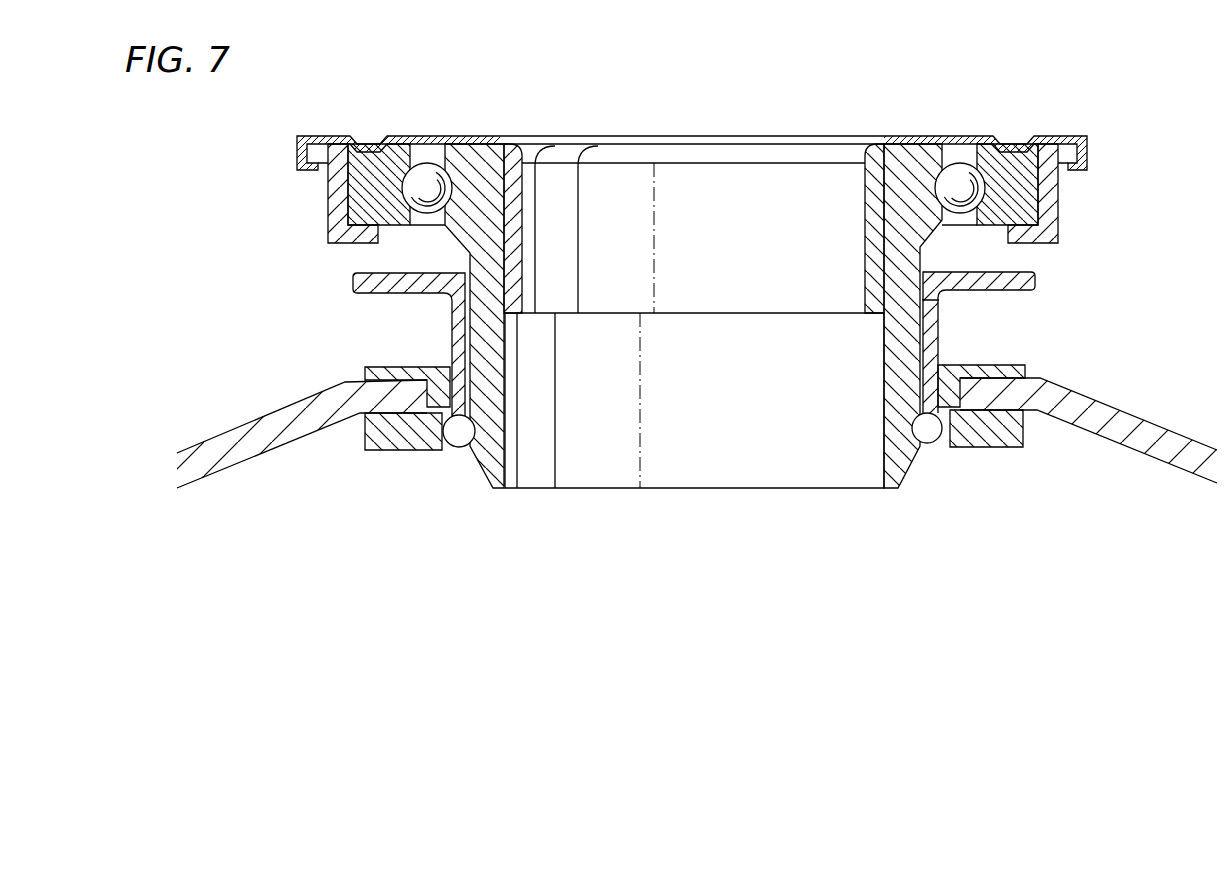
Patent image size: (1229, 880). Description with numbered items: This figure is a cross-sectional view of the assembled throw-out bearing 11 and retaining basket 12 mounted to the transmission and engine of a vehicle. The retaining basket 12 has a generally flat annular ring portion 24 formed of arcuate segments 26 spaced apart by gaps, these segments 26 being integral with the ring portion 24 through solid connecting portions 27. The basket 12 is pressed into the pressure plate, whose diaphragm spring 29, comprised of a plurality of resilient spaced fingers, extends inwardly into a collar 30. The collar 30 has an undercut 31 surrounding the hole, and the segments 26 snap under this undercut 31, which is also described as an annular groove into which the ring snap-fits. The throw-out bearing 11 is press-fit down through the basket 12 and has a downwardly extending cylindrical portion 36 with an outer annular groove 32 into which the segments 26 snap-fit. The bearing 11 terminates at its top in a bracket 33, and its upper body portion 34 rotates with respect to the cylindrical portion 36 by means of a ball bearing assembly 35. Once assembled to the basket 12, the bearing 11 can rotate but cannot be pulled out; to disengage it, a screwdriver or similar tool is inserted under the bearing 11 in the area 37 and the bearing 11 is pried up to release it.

The throw-out bearing 11 is at (478, 217).
The retaining basket 12 is at (955, 324).
The annular ring portion 24 is at (1005, 272).
The arcuate segments 26 is at (925, 437).
The solid connecting portions 27 is at (938, 348).
The diaphragm spring 29 is at (1128, 415).
The collar 30 is at (1008, 447).
The undercut 31 is at (938, 427).
The outer annular groove 32 is at (460, 433).
The bracket 33 is at (462, 136).
The upper body portion 34 is at (865, 217).
The ball bearing assembly 35 is at (428, 164).
The cylindrical portion 36 is at (505, 382).
The area 37 is at (967, 240).